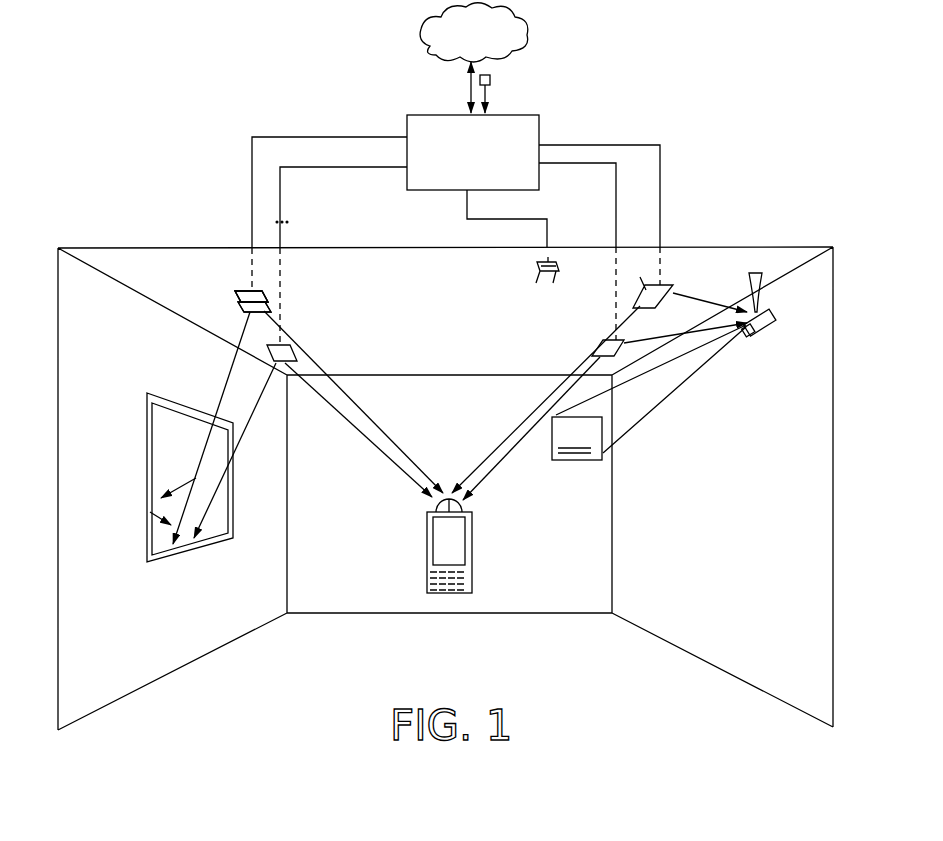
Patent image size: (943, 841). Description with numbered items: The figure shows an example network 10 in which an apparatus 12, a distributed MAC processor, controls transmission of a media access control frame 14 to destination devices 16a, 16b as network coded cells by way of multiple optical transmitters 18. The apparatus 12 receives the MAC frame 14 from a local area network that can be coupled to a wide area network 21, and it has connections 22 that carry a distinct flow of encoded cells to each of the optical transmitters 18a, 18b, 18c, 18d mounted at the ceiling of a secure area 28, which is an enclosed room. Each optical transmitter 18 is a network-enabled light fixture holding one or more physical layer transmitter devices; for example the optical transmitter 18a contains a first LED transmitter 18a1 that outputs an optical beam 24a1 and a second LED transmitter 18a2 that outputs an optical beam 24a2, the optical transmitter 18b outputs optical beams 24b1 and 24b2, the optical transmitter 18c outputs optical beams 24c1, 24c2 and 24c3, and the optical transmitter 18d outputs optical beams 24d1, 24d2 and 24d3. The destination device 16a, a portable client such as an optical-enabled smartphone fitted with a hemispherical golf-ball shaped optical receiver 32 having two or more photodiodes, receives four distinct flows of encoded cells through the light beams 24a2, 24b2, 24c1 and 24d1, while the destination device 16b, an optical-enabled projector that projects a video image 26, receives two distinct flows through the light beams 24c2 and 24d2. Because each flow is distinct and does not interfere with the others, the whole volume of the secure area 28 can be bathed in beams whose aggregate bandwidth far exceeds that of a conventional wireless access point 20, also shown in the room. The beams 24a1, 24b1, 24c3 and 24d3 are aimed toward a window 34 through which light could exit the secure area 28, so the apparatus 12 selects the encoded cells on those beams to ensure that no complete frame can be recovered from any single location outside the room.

The network 10 is at (758, 101).
The apparatus 12 is at (541, 124).
The media access control (MAC) frame 14 is at (491, 80).
The destination device 16a is at (472, 586).
The destination device 16b is at (772, 335).
The optical transmitters 18 is at (228, 310).
The optical transmitter 18a is at (243, 292).
The first LED transmitter 18a1 is at (262, 296).
The second LED transmitter 18a2 is at (270, 309).
The optical transmitter 18b is at (297, 353).
The optical transmitter 18c is at (650, 282).
The optical transmitter 18d is at (598, 345).
The wireless access point 20 is at (560, 268).
The wide area network 21 is at (526, 28).
The connections 22 is at (252, 145).
The optical beam 24a1 is at (245, 376).
The optical beam 24a2 is at (375, 421).
The optical beam 24b1 is at (245, 420).
The optical beam 24b2 is at (352, 425).
The optical beam 24c1 is at (488, 453).
The optical beam 24c2 is at (705, 300).
The optical beam 24c3 is at (196, 478).
The optical beam 24d1 is at (500, 467).
The optical beam 24d2 is at (665, 338).
The optical beam 24d3 is at (150, 512).
The video image 26 is at (577, 462).
The secure area 28 is at (694, 645).
The optical receiver 32 is at (448, 499).
The window 34 is at (188, 556).